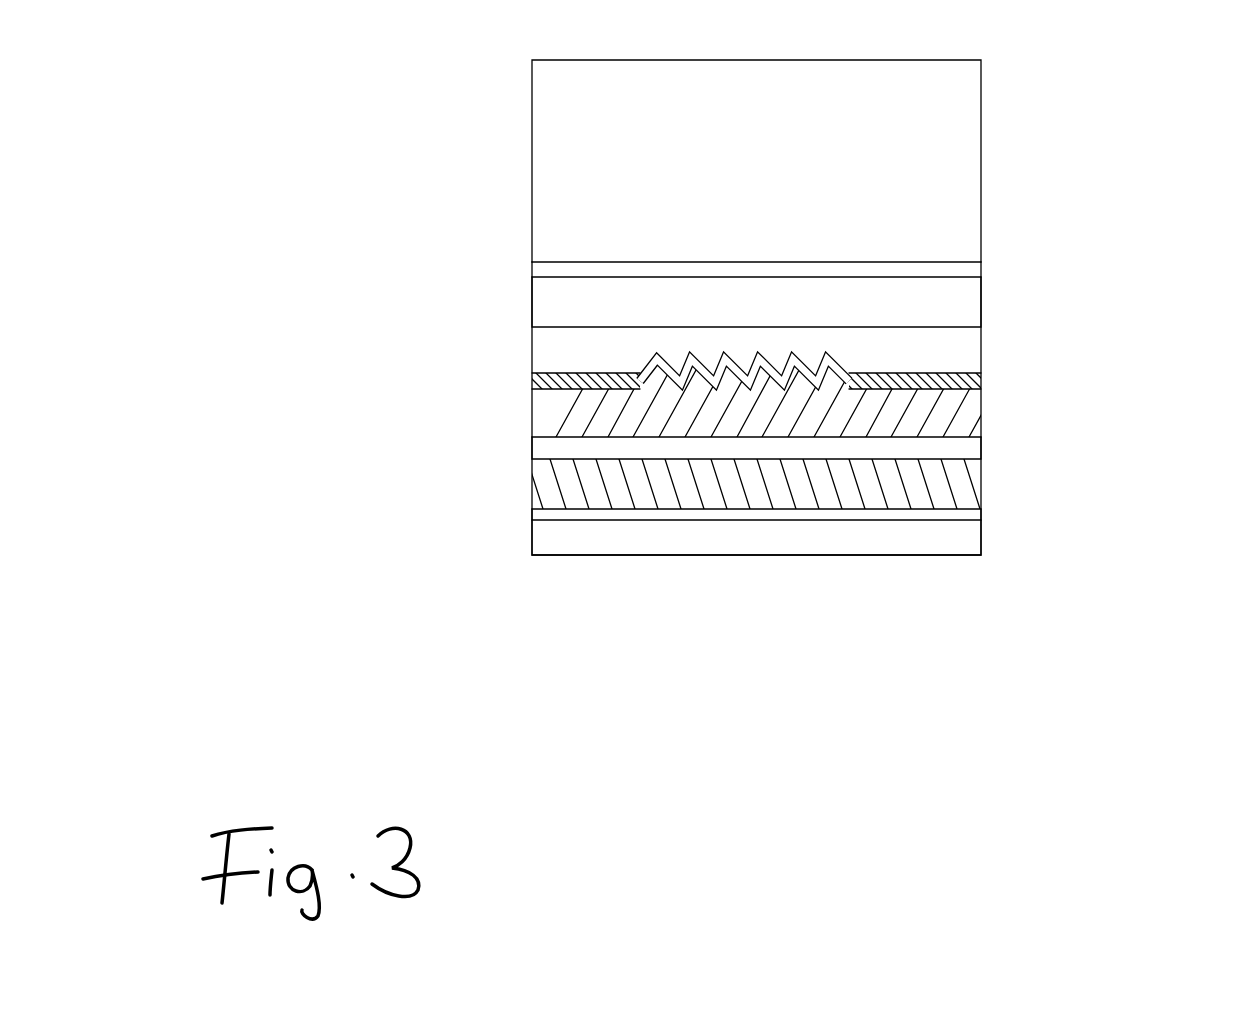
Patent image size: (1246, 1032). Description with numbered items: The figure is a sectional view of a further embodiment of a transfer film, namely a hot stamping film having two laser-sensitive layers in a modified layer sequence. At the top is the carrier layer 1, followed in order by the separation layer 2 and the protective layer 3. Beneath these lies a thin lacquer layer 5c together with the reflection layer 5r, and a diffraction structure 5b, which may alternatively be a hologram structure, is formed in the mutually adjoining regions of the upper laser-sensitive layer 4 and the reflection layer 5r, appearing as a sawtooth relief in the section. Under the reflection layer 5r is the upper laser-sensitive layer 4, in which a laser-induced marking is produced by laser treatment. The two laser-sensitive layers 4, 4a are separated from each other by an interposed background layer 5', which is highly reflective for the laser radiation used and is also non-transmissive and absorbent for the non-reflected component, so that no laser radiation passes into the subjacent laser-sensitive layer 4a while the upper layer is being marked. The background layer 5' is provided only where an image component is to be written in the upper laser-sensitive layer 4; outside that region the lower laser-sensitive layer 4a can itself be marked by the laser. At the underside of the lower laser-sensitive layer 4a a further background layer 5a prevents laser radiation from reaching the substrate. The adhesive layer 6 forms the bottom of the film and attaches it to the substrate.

The carrier layer 1 is at (928, 177).
The separation layer 2 is at (928, 272).
The protective layer 3 is at (930, 307).
The laser-sensitive layer 4 is at (932, 415).
The laser-sensitive layer 4a is at (932, 485).
The background layer 5' is at (694, 461).
The background layer 5a is at (542, 518).
The diffraction structure 5b is at (720, 385).
The lacquer layer 5c is at (930, 348).
The reflection layer 5r is at (975, 382).
The adhesive layer 6 is at (932, 542).